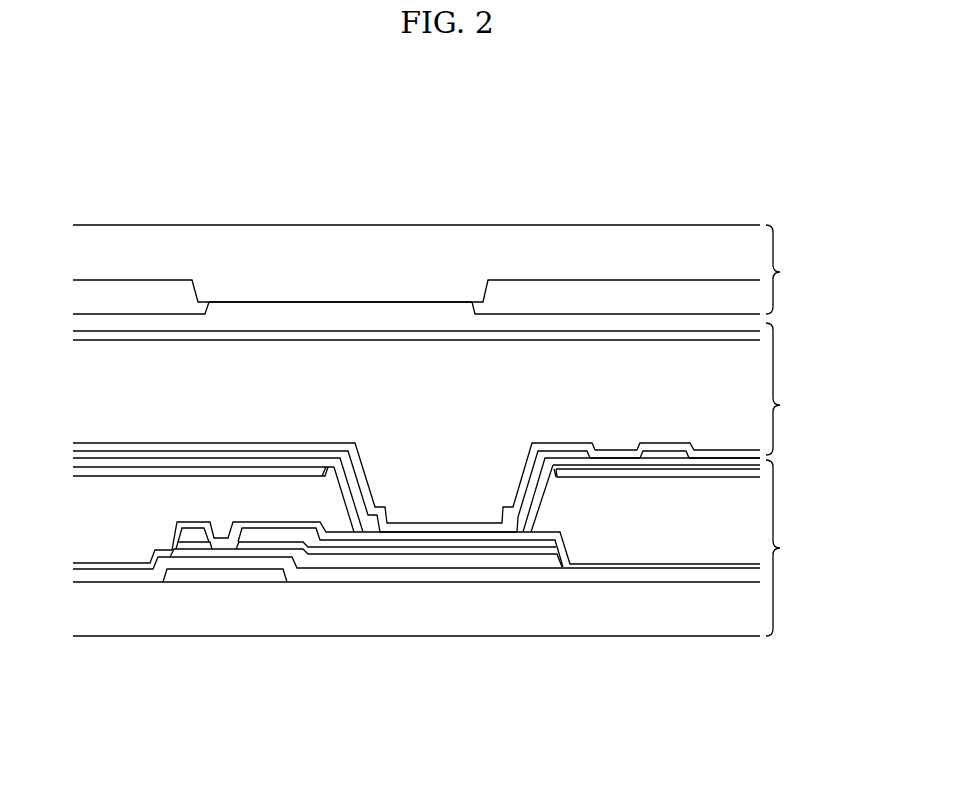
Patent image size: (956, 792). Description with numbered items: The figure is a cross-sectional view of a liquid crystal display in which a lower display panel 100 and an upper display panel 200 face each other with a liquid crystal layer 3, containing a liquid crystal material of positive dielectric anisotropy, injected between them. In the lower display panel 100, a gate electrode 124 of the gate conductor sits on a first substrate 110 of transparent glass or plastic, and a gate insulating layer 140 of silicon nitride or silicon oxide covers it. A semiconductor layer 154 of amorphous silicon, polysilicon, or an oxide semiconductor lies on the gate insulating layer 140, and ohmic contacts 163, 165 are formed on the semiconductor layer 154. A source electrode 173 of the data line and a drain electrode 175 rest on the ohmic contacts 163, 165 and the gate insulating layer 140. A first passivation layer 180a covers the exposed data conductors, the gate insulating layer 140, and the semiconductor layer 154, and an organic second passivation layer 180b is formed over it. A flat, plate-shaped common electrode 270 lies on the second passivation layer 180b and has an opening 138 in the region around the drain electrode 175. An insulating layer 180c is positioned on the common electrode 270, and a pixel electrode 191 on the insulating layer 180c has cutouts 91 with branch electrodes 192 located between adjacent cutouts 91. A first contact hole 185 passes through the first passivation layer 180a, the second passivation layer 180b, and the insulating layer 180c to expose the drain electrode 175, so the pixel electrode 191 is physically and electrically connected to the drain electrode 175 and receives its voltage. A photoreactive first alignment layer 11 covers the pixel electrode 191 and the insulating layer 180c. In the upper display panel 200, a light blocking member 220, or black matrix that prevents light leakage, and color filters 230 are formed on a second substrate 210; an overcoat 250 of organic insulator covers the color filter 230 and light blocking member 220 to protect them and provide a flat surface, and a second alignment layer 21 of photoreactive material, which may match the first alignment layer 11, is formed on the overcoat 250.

The liquid crystal layer 3 is at (781, 389).
The first alignment layer 11 is at (100, 447).
The second alignment layer 21 is at (282, 333).
The cutouts 91 is at (628, 447).
The lower display panel 100 is at (796, 548).
The first substrate 110 is at (730, 622).
The gate electrode 124 is at (233, 577).
The opening 138 is at (338, 470).
The gate insulating layer 140 is at (118, 577).
The semiconductor layer 154 is at (340, 565).
The ohmic contact 163 is at (188, 540).
The ohmic contact 165 is at (448, 548).
The source electrode 173 is at (197, 533).
The drain electrode 175 is at (510, 555).
The first passivation layer 180a is at (582, 567).
The second passivation layer 180b is at (652, 525).
The insulating layer 180c is at (733, 463).
The first contact hole 185 is at (385, 535).
The pixel electrode 191 is at (617, 447).
The branch electrodes 192 is at (680, 447).
The upper display panel 200 is at (796, 269).
The second substrate 210 is at (661, 243).
The light blocking member 220 is at (271, 290).
The color filter 230 is at (147, 293).
The overcoat 250 is at (382, 312).
The common electrode 270 is at (695, 470).